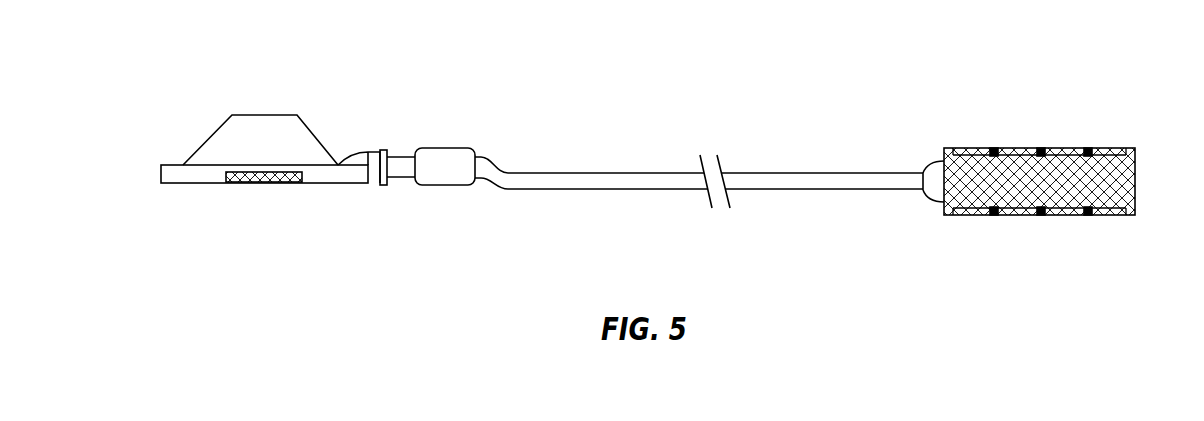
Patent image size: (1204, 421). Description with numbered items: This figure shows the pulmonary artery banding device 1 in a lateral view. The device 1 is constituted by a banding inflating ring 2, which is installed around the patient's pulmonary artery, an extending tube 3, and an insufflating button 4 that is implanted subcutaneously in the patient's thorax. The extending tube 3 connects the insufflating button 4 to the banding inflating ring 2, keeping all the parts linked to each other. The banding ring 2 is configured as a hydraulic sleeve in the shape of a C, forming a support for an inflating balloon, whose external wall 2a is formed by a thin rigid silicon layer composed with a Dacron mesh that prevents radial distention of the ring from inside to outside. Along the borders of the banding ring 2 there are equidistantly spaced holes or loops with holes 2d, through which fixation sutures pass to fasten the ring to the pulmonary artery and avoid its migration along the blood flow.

The pulmonary artery banding device 1 is at (677, 141).
The banding inflating ring 2 is at (1125, 142).
The external wall 2a is at (1133, 188).
The holes or loops with holes 2d is at (1038, 148).
The extending tube 3 is at (585, 193).
The insufflating button 4 is at (198, 187).